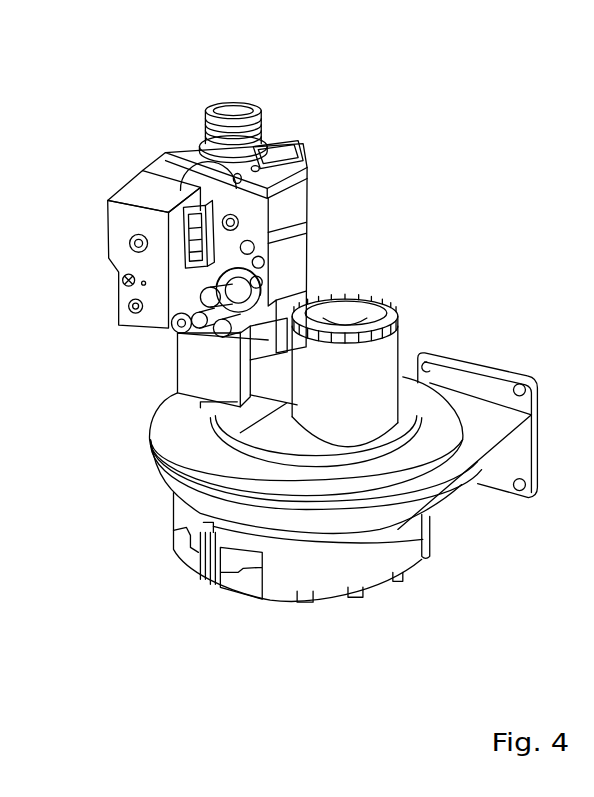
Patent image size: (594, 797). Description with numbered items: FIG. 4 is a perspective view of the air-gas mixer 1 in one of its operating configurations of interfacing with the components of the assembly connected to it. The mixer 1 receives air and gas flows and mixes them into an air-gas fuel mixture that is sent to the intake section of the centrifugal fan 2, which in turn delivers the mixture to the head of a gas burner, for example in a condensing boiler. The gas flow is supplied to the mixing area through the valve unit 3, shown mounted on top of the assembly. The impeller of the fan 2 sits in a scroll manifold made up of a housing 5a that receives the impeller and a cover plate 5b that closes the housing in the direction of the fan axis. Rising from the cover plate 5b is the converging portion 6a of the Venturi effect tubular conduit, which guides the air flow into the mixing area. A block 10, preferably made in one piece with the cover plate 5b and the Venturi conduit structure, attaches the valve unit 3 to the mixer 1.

The air-gas mixer 1 is at (428, 325).
The centrifugal fan 2 is at (246, 625).
The valve unit 3 is at (141, 113).
The housing 5a is at (433, 502).
The cover plate 5b is at (183, 447).
The converging portion 6a is at (363, 308).
The block 10 is at (160, 358).